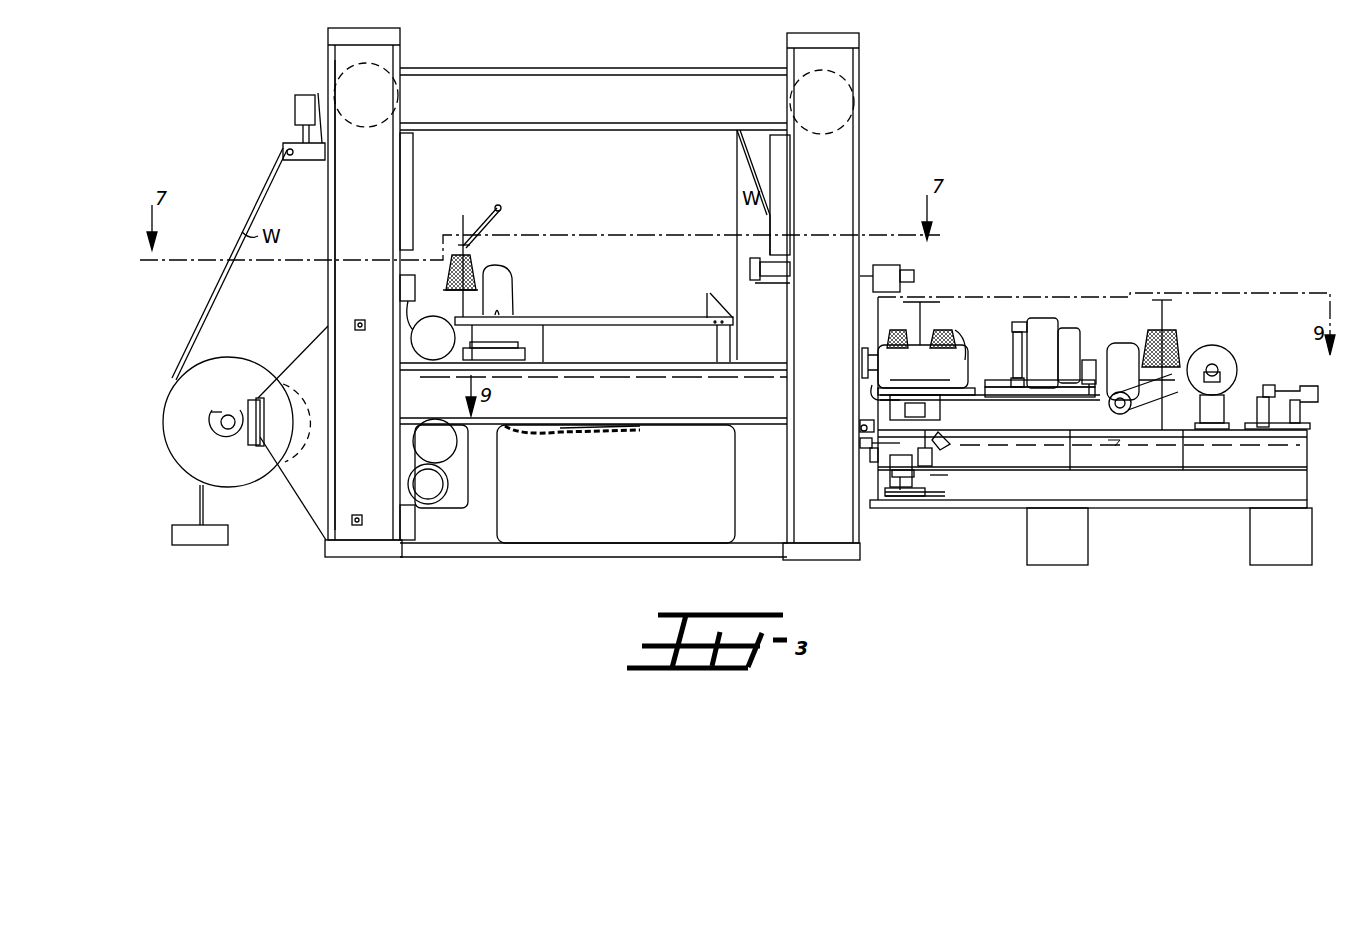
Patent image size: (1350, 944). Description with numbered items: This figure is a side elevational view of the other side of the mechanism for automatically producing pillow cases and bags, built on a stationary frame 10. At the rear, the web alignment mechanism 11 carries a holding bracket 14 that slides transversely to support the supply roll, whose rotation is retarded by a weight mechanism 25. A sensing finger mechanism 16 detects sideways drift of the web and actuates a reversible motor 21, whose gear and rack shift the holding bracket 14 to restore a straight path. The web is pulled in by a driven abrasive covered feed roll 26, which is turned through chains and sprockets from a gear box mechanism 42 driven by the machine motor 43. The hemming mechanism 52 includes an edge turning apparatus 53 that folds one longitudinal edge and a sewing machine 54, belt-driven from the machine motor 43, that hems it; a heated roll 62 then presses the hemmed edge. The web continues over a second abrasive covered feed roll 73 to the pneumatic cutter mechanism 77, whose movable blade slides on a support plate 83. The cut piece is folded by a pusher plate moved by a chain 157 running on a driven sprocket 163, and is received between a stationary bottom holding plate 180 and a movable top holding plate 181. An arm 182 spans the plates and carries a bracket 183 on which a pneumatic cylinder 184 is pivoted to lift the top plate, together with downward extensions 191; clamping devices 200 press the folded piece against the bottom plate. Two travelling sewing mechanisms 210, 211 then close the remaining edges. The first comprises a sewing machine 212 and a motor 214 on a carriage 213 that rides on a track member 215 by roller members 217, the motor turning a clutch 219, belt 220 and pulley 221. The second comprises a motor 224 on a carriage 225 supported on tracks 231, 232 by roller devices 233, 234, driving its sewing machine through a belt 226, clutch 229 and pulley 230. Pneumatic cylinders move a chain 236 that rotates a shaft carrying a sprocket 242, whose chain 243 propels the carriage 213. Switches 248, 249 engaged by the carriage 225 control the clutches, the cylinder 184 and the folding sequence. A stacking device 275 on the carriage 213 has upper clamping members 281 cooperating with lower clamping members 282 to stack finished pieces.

The stationary frame 10 is at (318, 545).
The web alignment mechanism 11 is at (302, 335).
The holding bracket 14 is at (320, 399).
The sensing finger mechanism 16 is at (282, 90).
The reversible motor 21 is at (413, 522).
The weight mechanism 25 is at (228, 534).
The abrasive covered feed roll 26 is at (352, 70).
The gear box mechanism 42 is at (440, 495).
The machine motor 43 is at (448, 452).
The hemming mechanism 52 is at (518, 248).
The edge turning apparatus 53 is at (676, 318).
The sewing machine 54 is at (500, 275).
The heated roll 62 is at (446, 349).
The abrasive covered feed roll 73 is at (847, 75).
The cutter mechanism 77 is at (738, 263).
The support plate 83 is at (890, 268).
The chain 157 is at (595, 432).
The driven sprocket 163 is at (522, 432).
The bottom holding plate 180 is at (1060, 412).
The top holding plate 181 is at (1000, 385).
The arm 182 is at (1042, 318).
The bracket 183 is at (1018, 320).
The pneumatic cylinder 184 is at (1013, 345).
The extensions 191 is at (1075, 345).
The clamping devices 200 is at (1093, 345).
The sewing mechanism 210 is at (1232, 345).
The sewing mechanism 211 is at (940, 340).
The sewing machine 212 is at (1135, 368).
The carriage 213 is at (1195, 440).
The motor 214 is at (1216, 333).
The track member 215 is at (1165, 450).
The roller members 217 is at (1106, 453).
The clutch 219 is at (1222, 368).
The belt 220 is at (1142, 378).
The pulley 221 is at (1110, 408).
The motor 224 is at (940, 371).
The carriage 225 is at (955, 420).
The belt 226 is at (862, 345).
The clutch 229 is at (868, 397).
The pulley 230 is at (862, 365).
The track 231 is at (892, 408).
The track 232 is at (975, 480).
The roller devices 233 is at (860, 425).
The roller devices 234 is at (932, 457).
The chain 236 is at (914, 473).
The sprocket 242 is at (904, 495).
The chain 243 is at (925, 500).
The switch 248 is at (862, 442).
The switch 249 is at (872, 453).
The stacking device 275 is at (1289, 414).
The upper clamping members 281 is at (1270, 384).
The lower clamping members 282 is at (1295, 386).